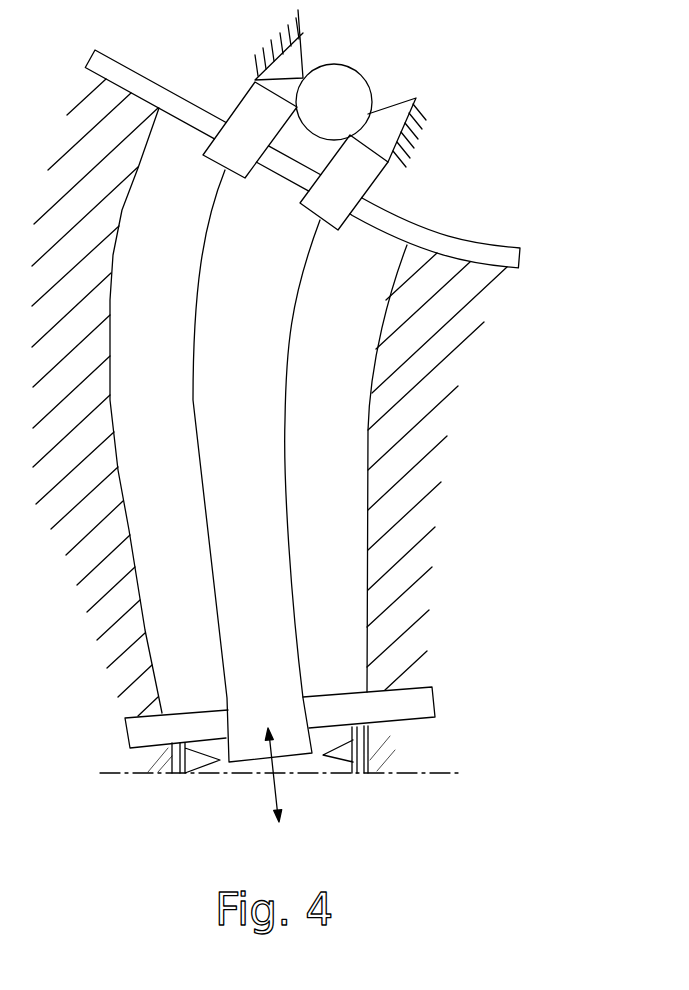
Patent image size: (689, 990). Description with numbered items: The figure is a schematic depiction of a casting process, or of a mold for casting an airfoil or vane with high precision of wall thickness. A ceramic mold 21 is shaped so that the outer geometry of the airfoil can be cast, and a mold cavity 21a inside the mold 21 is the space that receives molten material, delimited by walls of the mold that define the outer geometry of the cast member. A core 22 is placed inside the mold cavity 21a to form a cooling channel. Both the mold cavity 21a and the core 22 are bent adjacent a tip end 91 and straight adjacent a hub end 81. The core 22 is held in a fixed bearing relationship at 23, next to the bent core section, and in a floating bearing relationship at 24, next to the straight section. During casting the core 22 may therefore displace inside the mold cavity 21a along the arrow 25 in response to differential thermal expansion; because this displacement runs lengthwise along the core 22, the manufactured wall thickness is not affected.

The ceramic mold 21 is at (425, 435).
The mold cavity 21a is at (362, 337).
The core 22 is at (258, 370).
The fixed bearing 23 is at (387, 100).
The tip end 91 is at (395, 203).
The hub end 81 is at (142, 752).
The floating bearing 24 is at (333, 758).
The arrow 25 is at (272, 792).